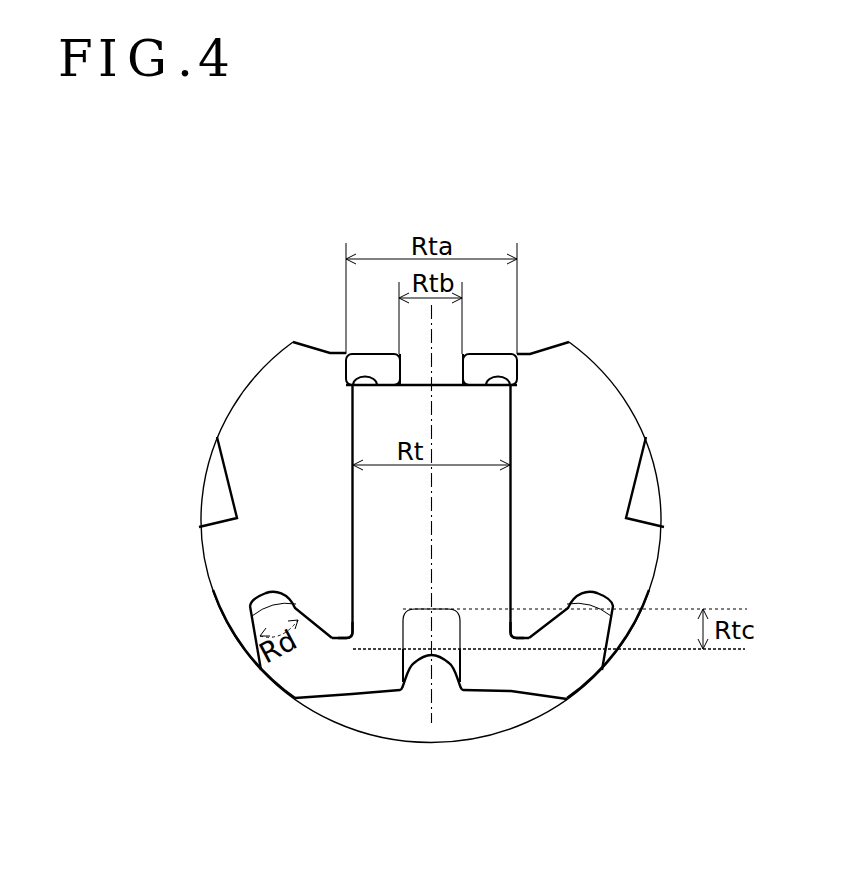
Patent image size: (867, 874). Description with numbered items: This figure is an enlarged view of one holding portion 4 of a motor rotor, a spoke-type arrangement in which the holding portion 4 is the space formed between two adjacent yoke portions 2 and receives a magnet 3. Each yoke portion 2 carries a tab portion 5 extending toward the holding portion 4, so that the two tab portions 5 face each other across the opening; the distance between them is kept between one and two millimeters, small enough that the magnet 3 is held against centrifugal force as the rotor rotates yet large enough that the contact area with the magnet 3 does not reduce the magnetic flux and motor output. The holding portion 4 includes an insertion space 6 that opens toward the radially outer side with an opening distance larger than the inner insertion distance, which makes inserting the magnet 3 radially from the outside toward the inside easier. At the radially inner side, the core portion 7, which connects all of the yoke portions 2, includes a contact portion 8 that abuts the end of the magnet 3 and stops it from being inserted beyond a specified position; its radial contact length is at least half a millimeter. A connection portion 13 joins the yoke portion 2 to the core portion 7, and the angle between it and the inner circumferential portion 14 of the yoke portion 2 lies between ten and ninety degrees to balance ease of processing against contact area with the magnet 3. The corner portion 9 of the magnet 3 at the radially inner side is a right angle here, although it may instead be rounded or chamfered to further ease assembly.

The yoke portion 2 is at (300, 407).
The magnet 3 is at (490, 430).
The holding portion 4 is at (417, 376).
The tab portion 5 is at (493, 365).
The insertion space 6 is at (443, 346).
The core portion 7 is at (325, 706).
The contact portion 8 is at (447, 657).
The corner portion 9 is at (356, 672).
The connection portion 13 is at (247, 637).
The inner circumferential portion 14 is at (250, 615).